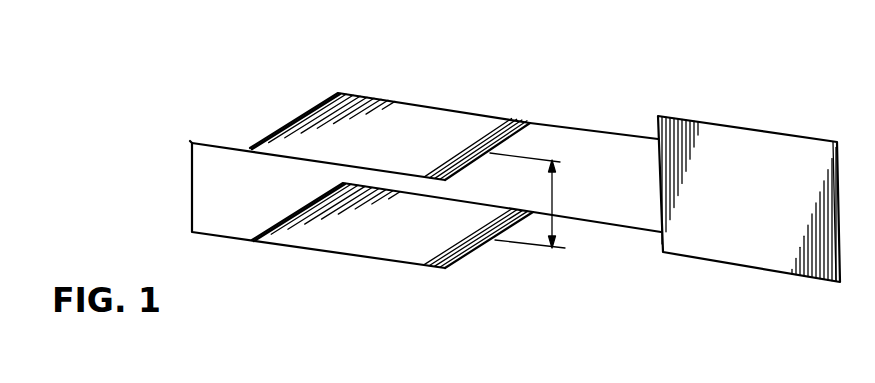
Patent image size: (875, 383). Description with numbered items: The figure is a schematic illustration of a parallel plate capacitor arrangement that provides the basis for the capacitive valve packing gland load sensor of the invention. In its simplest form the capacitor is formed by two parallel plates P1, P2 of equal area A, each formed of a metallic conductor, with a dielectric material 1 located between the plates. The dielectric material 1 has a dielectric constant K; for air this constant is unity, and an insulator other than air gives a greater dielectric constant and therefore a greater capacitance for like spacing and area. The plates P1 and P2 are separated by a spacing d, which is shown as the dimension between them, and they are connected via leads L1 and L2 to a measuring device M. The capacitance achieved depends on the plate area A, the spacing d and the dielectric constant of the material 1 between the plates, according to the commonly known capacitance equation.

The dielectric material 1 is at (497, 181).
The parallel plate P1 is at (403, 108).
The parallel plate P2 is at (342, 242).
The area A is at (404, 151).
The lead L1 is at (573, 124).
The lead L2 is at (582, 218).
The measuring device M is at (749, 199).
The spacing between the plates d is at (554, 201).